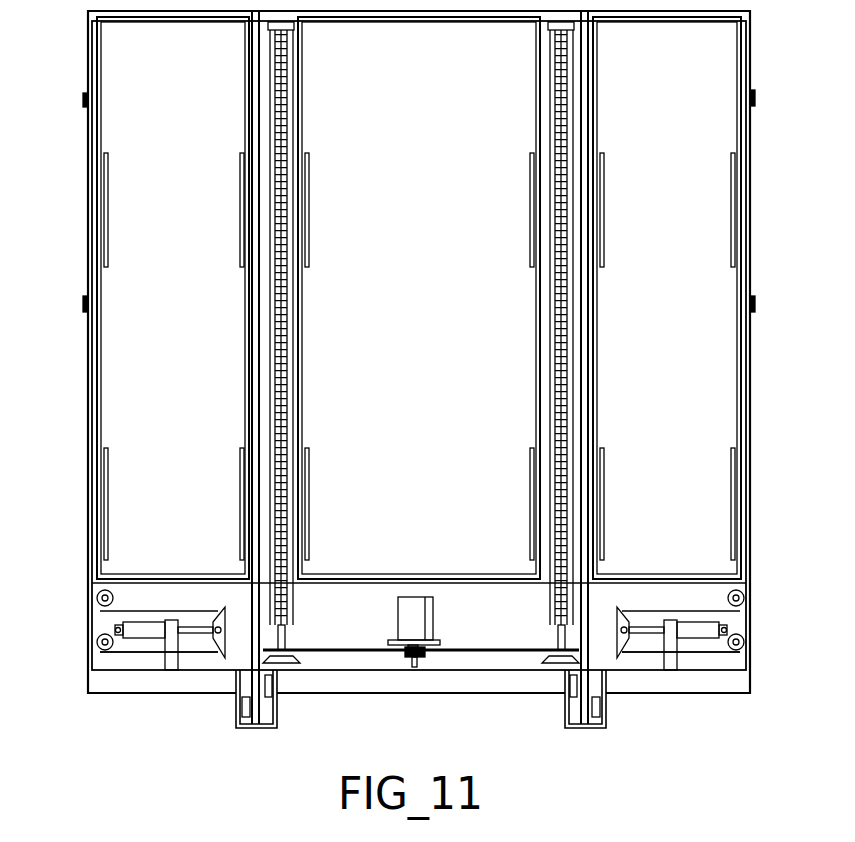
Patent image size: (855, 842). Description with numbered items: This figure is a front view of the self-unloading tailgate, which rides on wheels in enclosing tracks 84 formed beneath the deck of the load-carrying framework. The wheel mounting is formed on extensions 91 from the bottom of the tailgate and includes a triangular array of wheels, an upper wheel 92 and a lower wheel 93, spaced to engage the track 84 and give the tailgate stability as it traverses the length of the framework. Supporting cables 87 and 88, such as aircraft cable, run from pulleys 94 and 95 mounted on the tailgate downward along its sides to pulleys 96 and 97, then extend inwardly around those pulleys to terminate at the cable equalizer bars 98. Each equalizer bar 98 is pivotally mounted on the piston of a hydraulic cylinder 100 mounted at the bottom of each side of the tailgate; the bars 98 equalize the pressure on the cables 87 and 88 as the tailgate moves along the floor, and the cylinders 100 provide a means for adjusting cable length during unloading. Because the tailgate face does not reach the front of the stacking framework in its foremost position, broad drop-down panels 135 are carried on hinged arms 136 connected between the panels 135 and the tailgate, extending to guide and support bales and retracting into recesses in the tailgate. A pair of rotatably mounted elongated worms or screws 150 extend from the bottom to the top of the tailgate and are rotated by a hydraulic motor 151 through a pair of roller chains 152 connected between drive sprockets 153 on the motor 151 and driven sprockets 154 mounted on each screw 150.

The tracks 84 is at (262, 728).
The supporting cable 87 is at (652, 606).
The supporting cable 88 is at (148, 652).
The extensions 91 is at (253, 597).
The upper wheel 92 is at (273, 690).
The lower wheel 93 is at (242, 712).
The pulley 94 is at (83, 99).
The pulley 95 is at (85, 310).
The pulley 96 is at (97, 598).
The pulley 97 is at (97, 643).
The cable equalizer bar 98 is at (622, 619).
The hydraulic cylinder 100 is at (141, 622).
The drop-down panel 135 is at (190, 217).
The hinged arm 136 is at (108, 259).
The screw 150 is at (292, 428).
The hydraulic motor 151 is at (398, 604).
The roller chain 152 is at (347, 639).
The drive sprocket 153 is at (425, 645).
The driven sprocket 154 is at (292, 652).